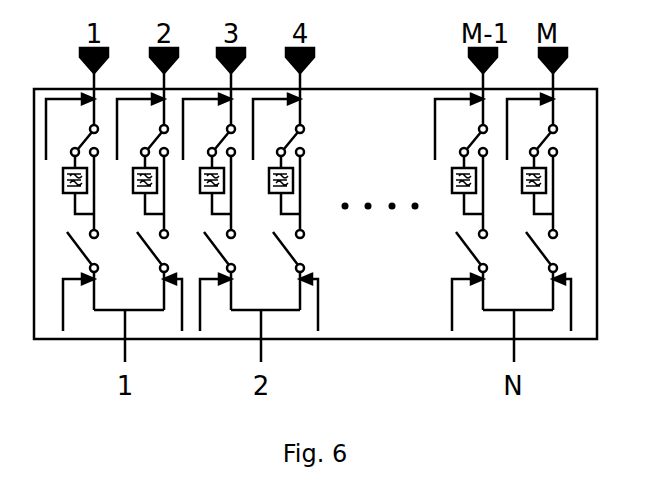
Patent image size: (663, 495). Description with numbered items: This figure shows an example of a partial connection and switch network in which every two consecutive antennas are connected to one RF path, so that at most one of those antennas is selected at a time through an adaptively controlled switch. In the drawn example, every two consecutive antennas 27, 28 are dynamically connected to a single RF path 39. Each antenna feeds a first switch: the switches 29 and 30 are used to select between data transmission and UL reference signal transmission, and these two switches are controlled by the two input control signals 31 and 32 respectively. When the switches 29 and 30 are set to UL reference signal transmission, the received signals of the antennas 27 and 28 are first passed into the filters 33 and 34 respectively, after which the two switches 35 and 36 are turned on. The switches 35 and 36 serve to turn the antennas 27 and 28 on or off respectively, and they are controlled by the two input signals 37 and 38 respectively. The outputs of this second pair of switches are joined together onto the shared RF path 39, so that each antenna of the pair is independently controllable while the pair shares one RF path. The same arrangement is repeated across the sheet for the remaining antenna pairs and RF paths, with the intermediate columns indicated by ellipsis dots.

The antenna 27 is at (316, 202).
The antenna 28 is at (470, 61).
The switch 29 is at (558, 140).
The switch 30 is at (466, 140).
The input control signal 31 is at (530, 127).
The input control signal 32 is at (446, 127).
The filter 33 is at (517, 181).
The filter 34 is at (447, 181).
The switch 35 is at (556, 251).
The switch 36 is at (460, 251).
The input signal 37 is at (576, 302).
The input signal 38 is at (448, 302).
The RF path 39 is at (518, 336).